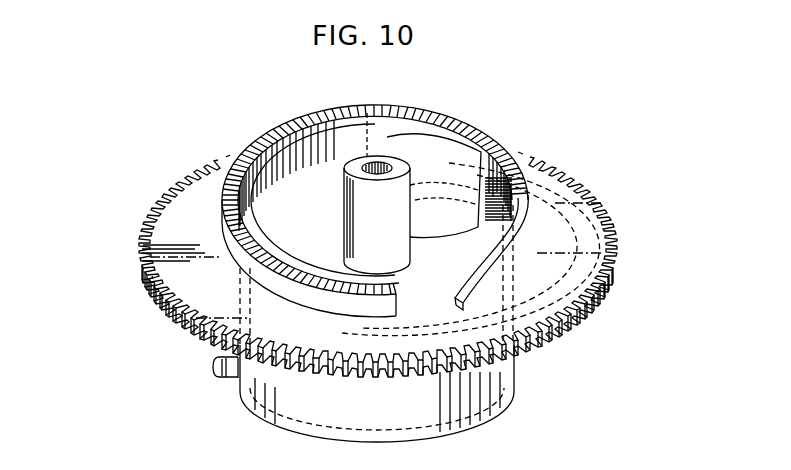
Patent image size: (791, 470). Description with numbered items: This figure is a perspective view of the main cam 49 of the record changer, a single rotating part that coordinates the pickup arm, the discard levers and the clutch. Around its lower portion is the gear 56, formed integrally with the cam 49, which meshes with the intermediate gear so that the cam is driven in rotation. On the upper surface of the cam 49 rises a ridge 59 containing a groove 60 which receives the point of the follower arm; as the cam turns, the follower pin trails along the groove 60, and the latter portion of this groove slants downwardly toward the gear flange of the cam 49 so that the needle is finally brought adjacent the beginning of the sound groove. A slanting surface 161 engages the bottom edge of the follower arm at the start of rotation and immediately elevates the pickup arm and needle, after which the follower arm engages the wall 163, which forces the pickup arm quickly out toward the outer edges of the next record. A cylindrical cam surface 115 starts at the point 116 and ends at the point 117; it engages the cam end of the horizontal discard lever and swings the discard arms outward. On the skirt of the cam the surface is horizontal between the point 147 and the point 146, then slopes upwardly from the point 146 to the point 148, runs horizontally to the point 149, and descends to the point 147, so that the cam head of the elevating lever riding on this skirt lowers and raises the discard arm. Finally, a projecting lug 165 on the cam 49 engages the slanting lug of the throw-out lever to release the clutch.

The cam 49 is at (268, 391).
The gear 56 is at (166, 305).
The ridge 59 is at (520, 158).
The groove 60 is at (455, 134).
The cam surface 115 is at (600, 206).
The point 116 is at (342, 330).
The point 117 is at (367, 113).
The point 146 is at (236, 350).
The point 147 is at (480, 305).
The point 148 is at (288, 268).
The point 149 is at (406, 262).
The slanting surface 161 is at (481, 266).
The wall 163 is at (449, 186).
The projecting lug 165 is at (214, 372).